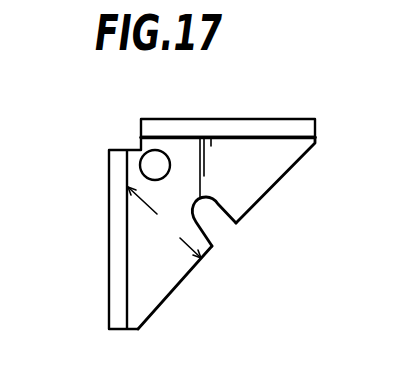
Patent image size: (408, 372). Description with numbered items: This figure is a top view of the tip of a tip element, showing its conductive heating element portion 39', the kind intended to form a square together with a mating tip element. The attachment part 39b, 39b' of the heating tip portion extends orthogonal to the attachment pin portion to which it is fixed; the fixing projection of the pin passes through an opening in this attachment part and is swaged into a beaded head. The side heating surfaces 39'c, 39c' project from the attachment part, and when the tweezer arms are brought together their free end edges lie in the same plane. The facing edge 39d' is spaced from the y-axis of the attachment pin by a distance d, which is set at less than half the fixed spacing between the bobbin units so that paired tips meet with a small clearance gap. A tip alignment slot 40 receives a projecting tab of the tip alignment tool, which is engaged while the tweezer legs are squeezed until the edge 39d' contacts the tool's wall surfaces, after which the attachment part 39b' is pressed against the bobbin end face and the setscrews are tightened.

The conductive heating element portion 39' is at (177, 306).
The heating surface 39'c is at (228, 98).
The heating surface 39c' is at (76, 233).
The attachment part 39b is at (111, 132).
The attachment part 39b' is at (230, 168).
The facing edge 39d' is at (299, 180).
The tip alignment slot 40 is at (222, 224).
The distance d is at (164, 222).